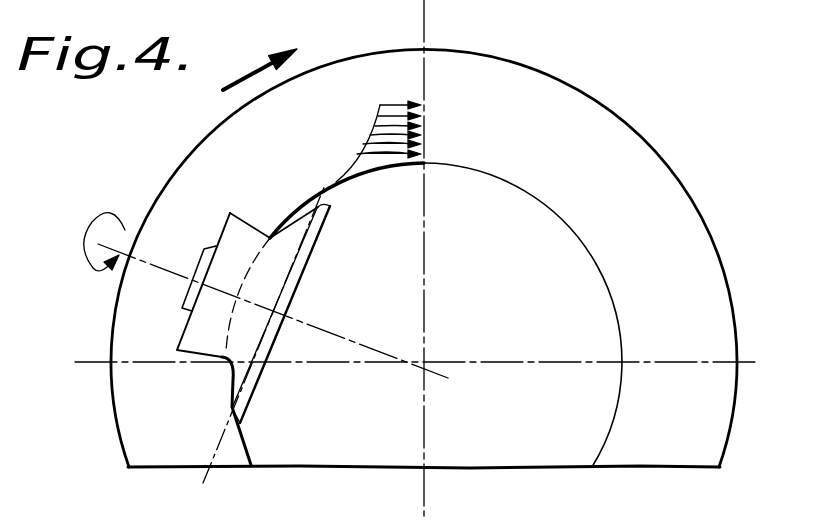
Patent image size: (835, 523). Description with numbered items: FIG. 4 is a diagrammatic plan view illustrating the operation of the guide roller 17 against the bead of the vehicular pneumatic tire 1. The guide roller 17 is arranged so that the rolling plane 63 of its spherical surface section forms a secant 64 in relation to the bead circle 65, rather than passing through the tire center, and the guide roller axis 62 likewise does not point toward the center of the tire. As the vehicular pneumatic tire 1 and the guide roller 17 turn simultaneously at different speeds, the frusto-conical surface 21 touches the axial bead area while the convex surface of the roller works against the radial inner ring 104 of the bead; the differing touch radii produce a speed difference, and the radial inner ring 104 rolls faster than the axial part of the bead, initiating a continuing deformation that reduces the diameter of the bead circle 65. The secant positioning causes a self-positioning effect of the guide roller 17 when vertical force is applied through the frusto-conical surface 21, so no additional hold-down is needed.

The vehicular pneumatic tire 1 is at (548, 98).
The guide roller 17 is at (216, 219).
The frusto-conical surface 21 is at (259, 227).
The guide roller axis 62 is at (392, 284).
The rolling plane 63 is at (236, 410).
The secant 64 is at (226, 453).
The bead circle 65 is at (577, 233).
The radial inner ring 104 is at (270, 28).